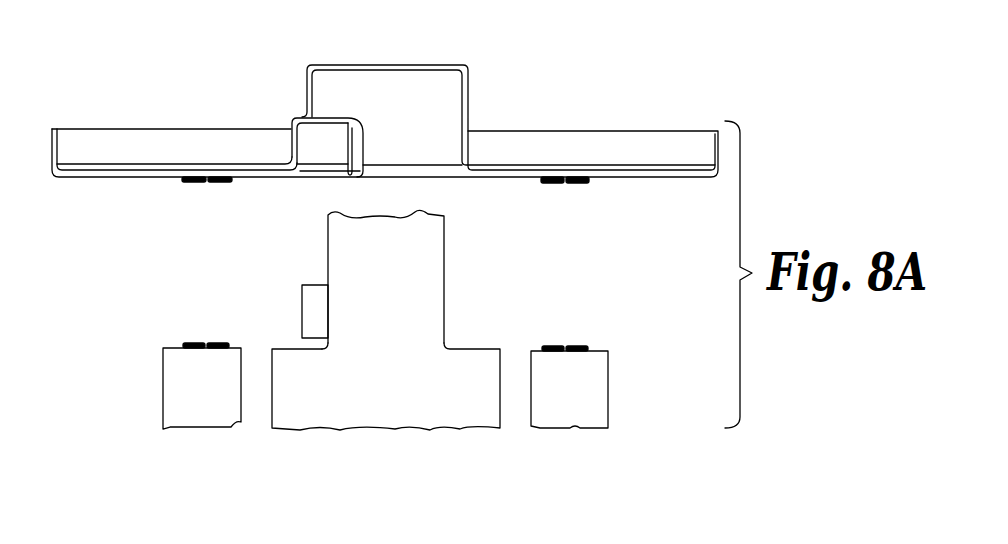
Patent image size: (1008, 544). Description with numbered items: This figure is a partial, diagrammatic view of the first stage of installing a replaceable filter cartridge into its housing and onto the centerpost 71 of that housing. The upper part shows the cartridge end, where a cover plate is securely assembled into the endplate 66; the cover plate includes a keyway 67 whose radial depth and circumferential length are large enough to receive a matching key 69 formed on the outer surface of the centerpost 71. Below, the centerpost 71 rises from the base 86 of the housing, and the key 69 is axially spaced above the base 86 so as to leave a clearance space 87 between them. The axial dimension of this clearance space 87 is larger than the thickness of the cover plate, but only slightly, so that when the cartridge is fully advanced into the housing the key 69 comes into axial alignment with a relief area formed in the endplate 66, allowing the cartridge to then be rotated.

The endplate 66 is at (606, 147).
The keyway 67 is at (315, 146).
The key 69 is at (313, 310).
The centerpost 71 is at (420, 260).
The base 86 is at (463, 376).
The clearance space 87 is at (303, 345).